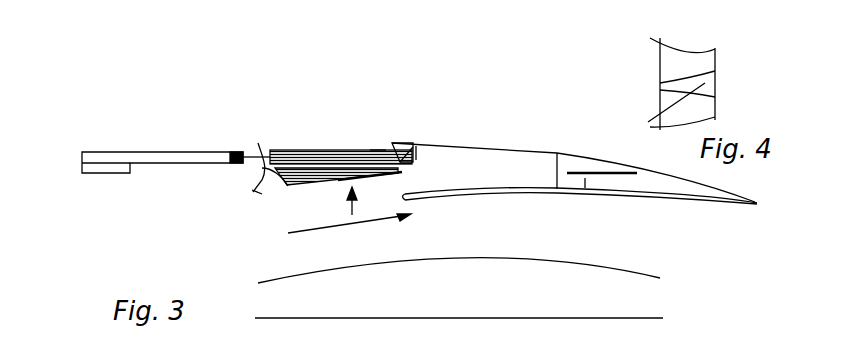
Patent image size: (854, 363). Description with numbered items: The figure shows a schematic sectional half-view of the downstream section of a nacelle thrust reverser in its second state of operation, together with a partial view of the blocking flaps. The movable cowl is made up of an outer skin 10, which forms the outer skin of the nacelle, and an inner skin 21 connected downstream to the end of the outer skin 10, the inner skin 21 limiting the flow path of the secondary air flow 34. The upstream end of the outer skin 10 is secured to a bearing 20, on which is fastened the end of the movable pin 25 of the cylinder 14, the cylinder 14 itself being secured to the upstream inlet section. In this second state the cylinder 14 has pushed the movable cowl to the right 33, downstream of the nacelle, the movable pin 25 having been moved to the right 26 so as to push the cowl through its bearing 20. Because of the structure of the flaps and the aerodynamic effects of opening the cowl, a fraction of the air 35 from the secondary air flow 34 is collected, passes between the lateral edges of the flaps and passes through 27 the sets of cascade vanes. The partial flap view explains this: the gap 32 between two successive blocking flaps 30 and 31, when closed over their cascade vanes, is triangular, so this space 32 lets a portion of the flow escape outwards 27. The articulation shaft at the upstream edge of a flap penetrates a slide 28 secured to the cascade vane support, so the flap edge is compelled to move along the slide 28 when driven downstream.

In FIG. 3, the outer skin of the movable cowl 10 is at (603, 159).
In FIG. 3, the cylinder 14 is at (186, 176).
In FIG. 3, the bearing 20 is at (420, 157).
In FIG. 3, the inner skin 21 is at (438, 200).
In FIG. 3, the movable pin 25 is at (352, 166).
In FIG. 3, the movement of the movable pin to the right 26 is at (294, 149).
In FIG. 3, the passage of air through the cascade vanes 27 is at (375, 150).
In FIG. 3, the slide 28 is at (268, 180).
In FIG. 3, the movement of the movable cowl to the right 33 is at (585, 189).
In FIG. 3, the secondary air flow 34 is at (350, 224).
In FIG. 3, the fraction of the air 35 is at (348, 211).
In FIG. 4, the blocking flap 30 is at (716, 64).
In FIG. 4, the blocking flap 31 is at (716, 108).
In FIG. 4, the gap between two successive blocking flaps 32 is at (690, 89).